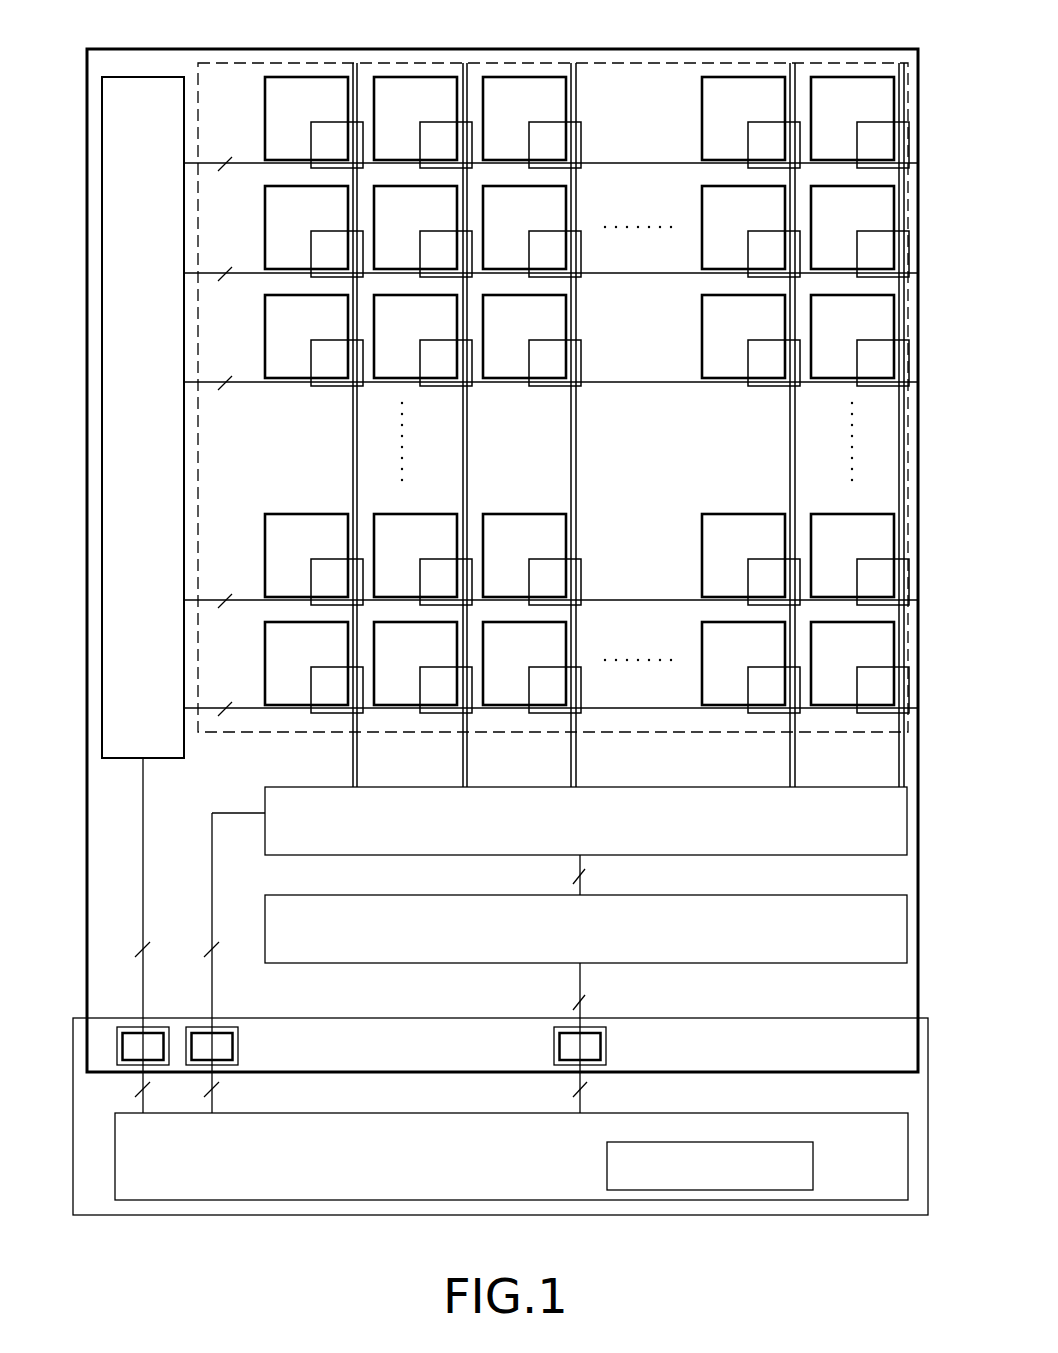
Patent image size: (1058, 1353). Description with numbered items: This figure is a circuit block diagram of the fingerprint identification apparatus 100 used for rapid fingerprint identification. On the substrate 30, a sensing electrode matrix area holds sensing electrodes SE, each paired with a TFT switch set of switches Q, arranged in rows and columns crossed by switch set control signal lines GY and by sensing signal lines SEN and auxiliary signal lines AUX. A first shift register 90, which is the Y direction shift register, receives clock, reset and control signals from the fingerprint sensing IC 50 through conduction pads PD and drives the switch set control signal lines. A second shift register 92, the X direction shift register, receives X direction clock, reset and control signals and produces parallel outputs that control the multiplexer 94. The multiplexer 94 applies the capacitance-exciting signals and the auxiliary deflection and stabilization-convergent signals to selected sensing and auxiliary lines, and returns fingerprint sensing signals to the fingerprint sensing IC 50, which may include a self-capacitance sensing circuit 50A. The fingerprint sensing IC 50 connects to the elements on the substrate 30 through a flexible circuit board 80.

The fingerprint identification apparatus 100 is at (521, 28).
The substrate 30 is at (97, 838).
The first shift register 90 is at (143, 417).
The multiplexer 94 is at (586, 821).
The second shift register 92 is at (586, 929).
The flexible circuit board 80 is at (920, 1088).
The fingerprint sensing integrated circuit 50 is at (511, 1156).
The self-capacitance sensing circuit 50A is at (710, 1166).